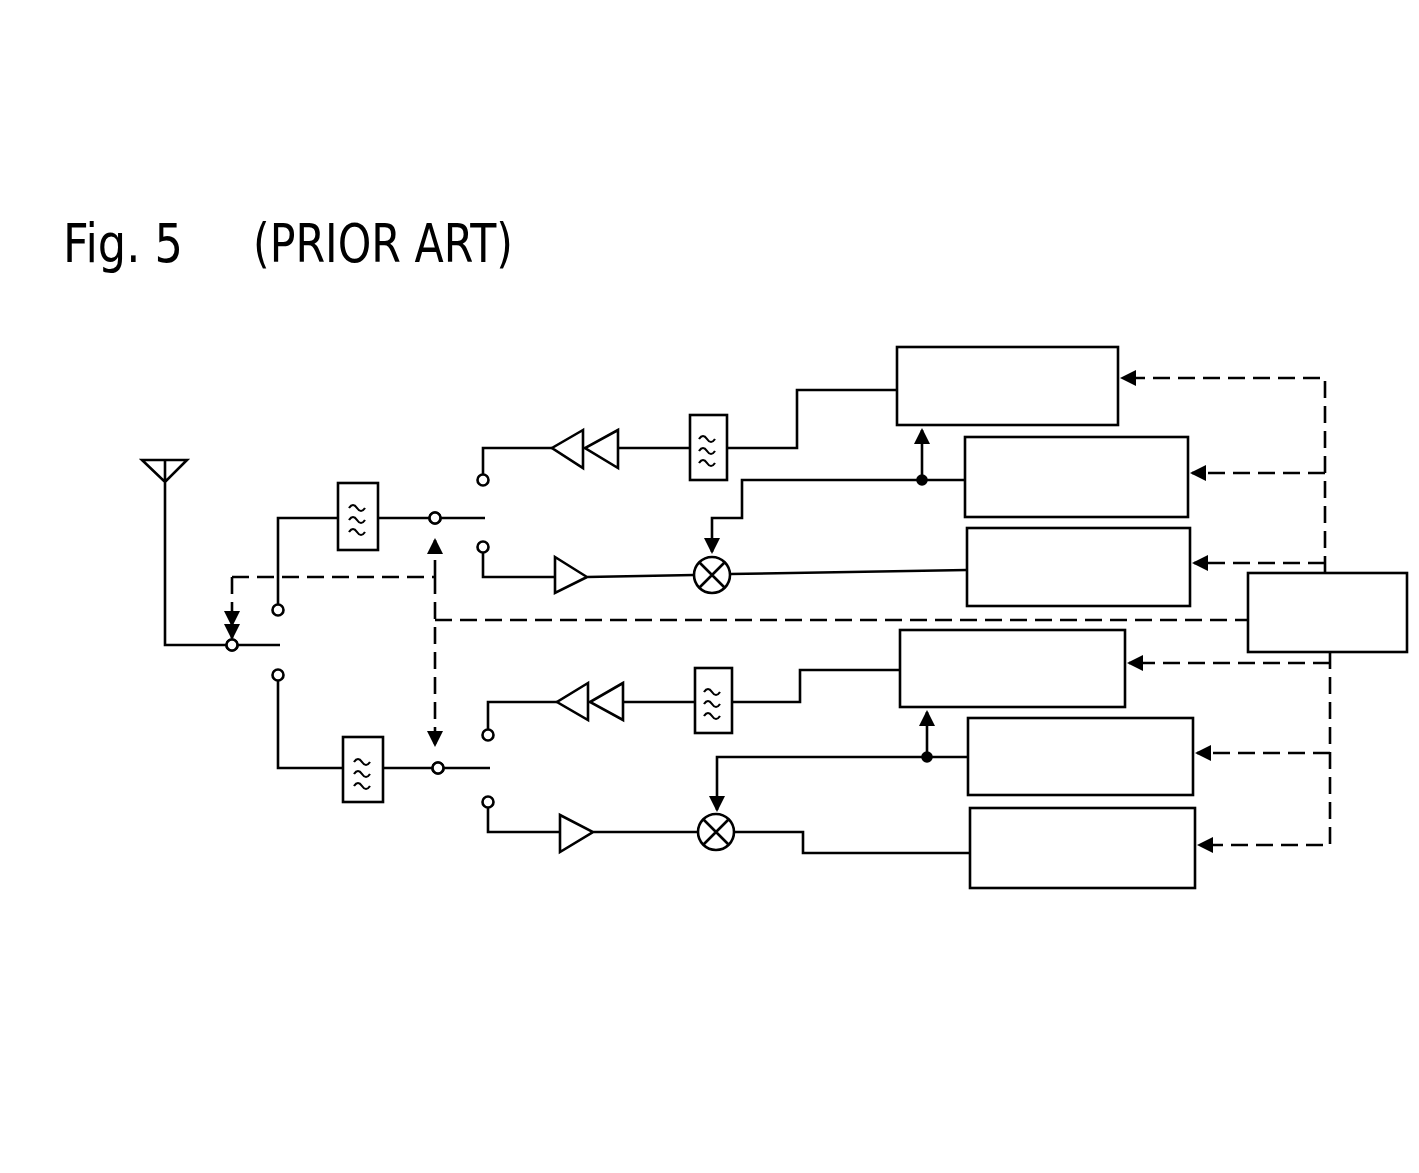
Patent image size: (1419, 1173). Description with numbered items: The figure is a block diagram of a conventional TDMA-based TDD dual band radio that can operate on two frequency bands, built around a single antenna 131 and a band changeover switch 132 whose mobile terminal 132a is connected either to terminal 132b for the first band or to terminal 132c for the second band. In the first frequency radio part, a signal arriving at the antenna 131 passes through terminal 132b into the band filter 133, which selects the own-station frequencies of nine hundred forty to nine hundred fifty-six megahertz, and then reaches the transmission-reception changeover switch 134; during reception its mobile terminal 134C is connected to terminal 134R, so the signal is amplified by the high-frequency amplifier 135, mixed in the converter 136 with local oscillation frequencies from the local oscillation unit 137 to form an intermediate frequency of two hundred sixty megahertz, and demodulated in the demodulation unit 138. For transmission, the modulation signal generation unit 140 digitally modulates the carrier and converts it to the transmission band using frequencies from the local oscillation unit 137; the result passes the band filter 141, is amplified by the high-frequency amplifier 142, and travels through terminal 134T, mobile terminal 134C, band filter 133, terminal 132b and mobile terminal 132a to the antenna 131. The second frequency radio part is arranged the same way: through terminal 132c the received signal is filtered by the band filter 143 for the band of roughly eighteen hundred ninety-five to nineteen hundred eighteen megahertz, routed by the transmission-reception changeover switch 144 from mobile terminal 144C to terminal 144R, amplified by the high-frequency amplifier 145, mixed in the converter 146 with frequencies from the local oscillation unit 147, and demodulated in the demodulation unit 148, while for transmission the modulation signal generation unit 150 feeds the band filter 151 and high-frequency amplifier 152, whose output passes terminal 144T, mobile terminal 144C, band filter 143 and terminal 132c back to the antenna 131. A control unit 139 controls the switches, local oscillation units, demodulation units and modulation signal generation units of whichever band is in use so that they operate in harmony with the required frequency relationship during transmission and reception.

The antenna 131 is at (155, 460).
The band changeover switch 132 is at (230, 652).
The mobile terminal of band changeover switch 132a is at (208, 700).
The terminal of band changeover switch 132b is at (284, 675).
The terminal of band changeover switch 132c is at (284, 612).
The band filter 133 is at (350, 802).
The transmission-reception changeover switch 134 is at (438, 775).
The mobile terminal of transmission-reception changeover switch 134C is at (455, 837).
The transmission terminal of transmission-reception changeover switch 134T is at (494, 738).
The reception terminal of transmission-reception changeover switch 134R is at (494, 801).
The high-frequency amplifier 135 is at (583, 852).
The converter 136 is at (720, 850).
The local oscillation unit 137 is at (1193, 725).
The demodulation unit 138 is at (1195, 875).
The control unit 139 is at (1357, 573).
The modulation signal generation unit 140 is at (1125, 685).
The band filter 141 is at (718, 668).
The high-frequency amplifier 142 is at (582, 683).
The band filter 143 is at (350, 483).
The transmission-reception changeover switch 144 is at (436, 512).
The mobile terminal of transmission-reception changeover switch 144C is at (443, 463).
The transmission terminal of transmission-reception changeover switch 144T is at (489, 483).
The reception terminal of transmission-reception changeover switch 144R is at (489, 546).
The high-frequency amplifier 145 is at (575, 588).
The converter 146 is at (725, 588).
The local oscillation unit 147 is at (1188, 442).
The demodulation unit 148 is at (1190, 540).
The modulation signal generation unit 150 is at (925, 347).
The band filter 151 is at (697, 415).
The high-frequency amplifier 152 is at (582, 430).